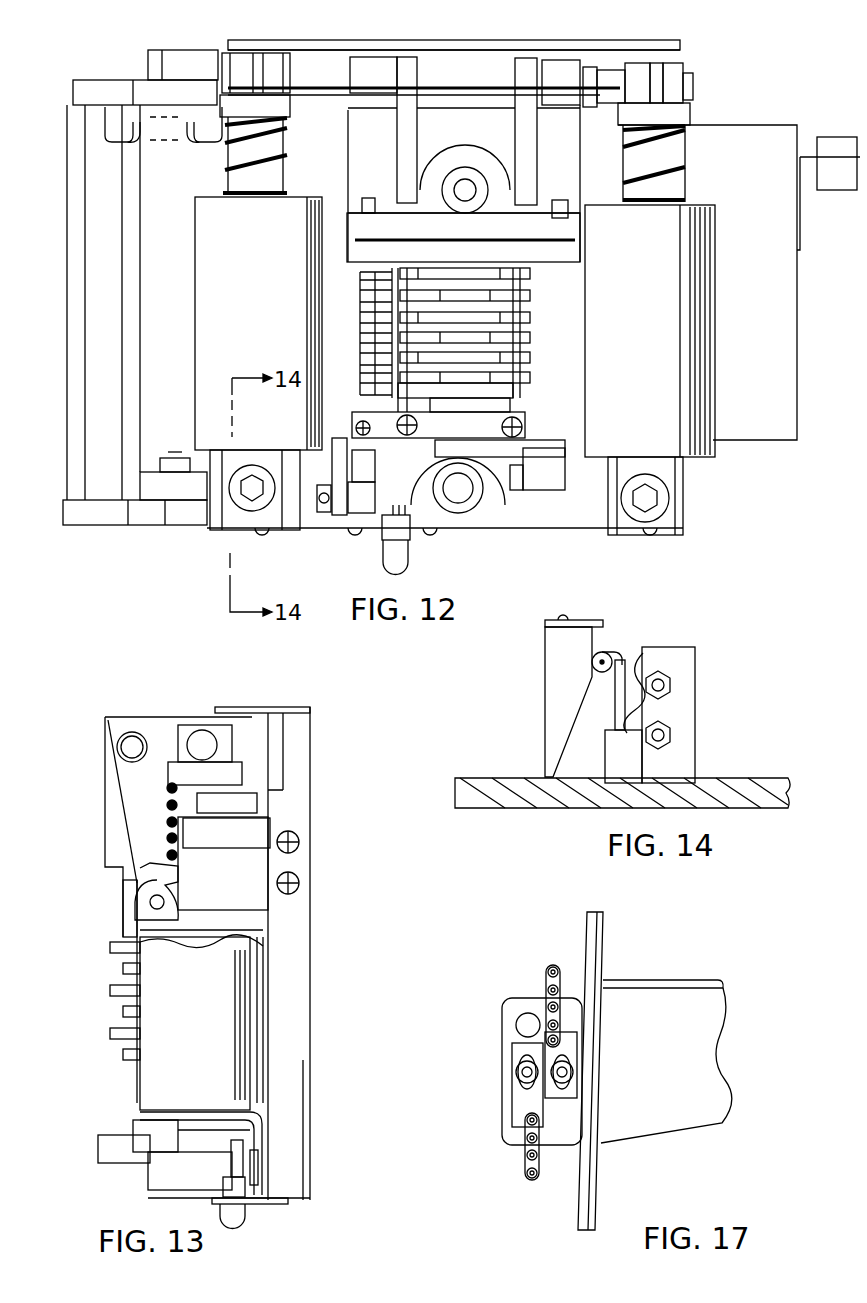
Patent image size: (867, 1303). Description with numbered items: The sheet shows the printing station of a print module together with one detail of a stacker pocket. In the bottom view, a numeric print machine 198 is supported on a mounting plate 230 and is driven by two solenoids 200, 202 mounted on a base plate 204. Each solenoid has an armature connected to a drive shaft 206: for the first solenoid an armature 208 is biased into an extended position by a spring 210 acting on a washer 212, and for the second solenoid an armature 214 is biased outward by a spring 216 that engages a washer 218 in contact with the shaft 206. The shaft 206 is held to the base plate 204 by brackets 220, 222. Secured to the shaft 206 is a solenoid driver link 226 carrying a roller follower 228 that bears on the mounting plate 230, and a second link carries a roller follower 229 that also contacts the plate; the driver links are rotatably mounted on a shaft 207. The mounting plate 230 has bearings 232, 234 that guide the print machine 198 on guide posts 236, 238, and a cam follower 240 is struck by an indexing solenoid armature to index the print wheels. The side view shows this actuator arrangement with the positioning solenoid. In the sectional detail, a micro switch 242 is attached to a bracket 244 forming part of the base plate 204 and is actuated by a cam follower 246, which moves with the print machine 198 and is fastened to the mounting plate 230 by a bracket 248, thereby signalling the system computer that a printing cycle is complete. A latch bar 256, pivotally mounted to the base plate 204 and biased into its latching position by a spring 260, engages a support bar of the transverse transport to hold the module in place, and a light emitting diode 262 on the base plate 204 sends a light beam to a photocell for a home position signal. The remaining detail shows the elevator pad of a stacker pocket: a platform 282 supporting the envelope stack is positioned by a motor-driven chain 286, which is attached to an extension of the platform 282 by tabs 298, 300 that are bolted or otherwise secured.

In FIG. 12, the numeric print machine 198 is at (370, 345).
In FIG. 13, the numeric print machine 198 is at (118, 1010).
In FIG. 12, the solenoid 200 is at (673, 392).
In FIG. 13, the solenoid 200 is at (213, 1057).
In FIG. 12, the solenoid 202 is at (222, 262).
In FIG. 12, the base plate 204 is at (574, 534).
In FIG. 13, the base plate 204 is at (295, 1078).
In FIG. 14, the base plate 204 is at (762, 802).
In FIG. 12, the drive shaft 206 is at (697, 77).
In FIG. 13, the drive shaft 206 is at (202, 735).
In FIG. 12, the shaft 207 is at (472, 82).
In FIG. 13, the shaft 207 is at (120, 748).
In FIG. 12, the armature 208 is at (683, 185).
In FIG. 12, the spring 210 is at (688, 142).
In FIG. 13, the spring 210 is at (170, 807).
In FIG. 12, the washer 212 is at (693, 115).
In FIG. 13, the washer 212 is at (178, 775).
In FIG. 12, the armature 214 is at (375, 53).
In FIG. 12, the spring 216 is at (288, 163).
In FIG. 12, the washer 218 is at (287, 107).
In FIG. 12, the bracket 220 is at (412, 70).
In FIG. 12, the bracket 222 is at (525, 72).
In FIG. 12, the solenoid driver link 226 is at (567, 68).
In FIG. 13, the solenoid driver link 226 is at (140, 830).
In FIG. 12, the roller follower 228 is at (558, 202).
In FIG. 13, the roller follower 228 is at (137, 918).
In FIG. 12, the roller follower 229 is at (362, 205).
In FIG. 12, the mounting plate 230 is at (372, 248).
In FIG. 13, the mounting plate 230 is at (123, 903).
In FIG. 12, the bearing 232 is at (455, 178).
In FIG. 12, the bearing 234 is at (480, 493).
In FIG. 12, the guide post 236 is at (467, 187).
In FIG. 12, the guide post 238 is at (458, 492).
In FIG. 13, the guide post 238 is at (110, 1155).
In FIG. 12, the cam follower 240 is at (553, 492).
In FIG. 13, the cam follower 240 is at (148, 1128).
In FIG. 14, the micro switch 242 is at (637, 657).
In FIG. 14, the bracket 244 is at (680, 700).
In FIG. 14, the cam follower 246 is at (558, 687).
In FIG. 14, the bracket 248 is at (587, 620).
In FIG. 12, the latch bar 256 is at (100, 515).
In FIG. 12, the spring 260 is at (168, 137).
In FIG. 12, the light emitting diode 262 is at (400, 567).
In FIG. 13, the light emitting diode 262 is at (245, 1223).
In FIG. 17, the platform 282 is at (678, 980).
In FIG. 17, the chain 286 is at (545, 992).
In FIG. 17, the tab 298 is at (570, 1092).
In FIG. 17, the tab 300 is at (530, 1102).